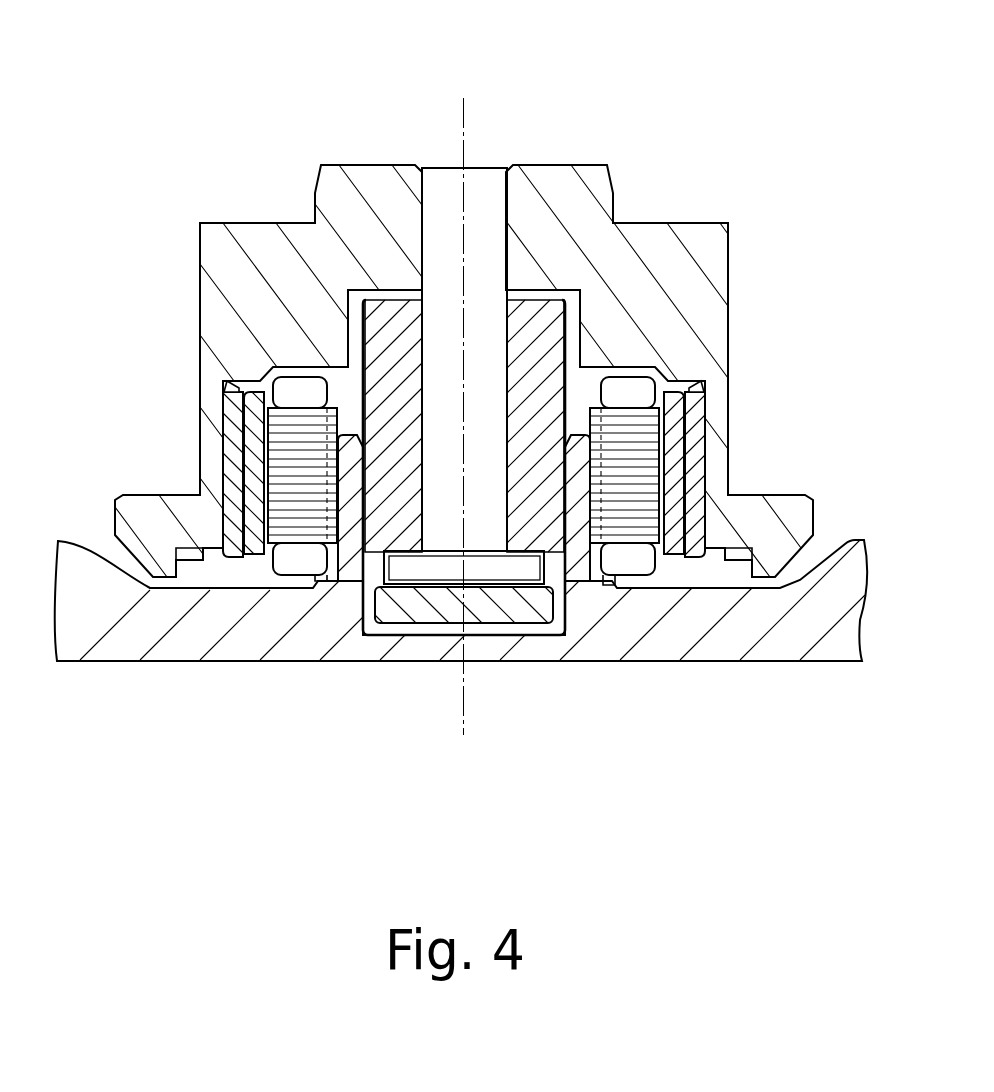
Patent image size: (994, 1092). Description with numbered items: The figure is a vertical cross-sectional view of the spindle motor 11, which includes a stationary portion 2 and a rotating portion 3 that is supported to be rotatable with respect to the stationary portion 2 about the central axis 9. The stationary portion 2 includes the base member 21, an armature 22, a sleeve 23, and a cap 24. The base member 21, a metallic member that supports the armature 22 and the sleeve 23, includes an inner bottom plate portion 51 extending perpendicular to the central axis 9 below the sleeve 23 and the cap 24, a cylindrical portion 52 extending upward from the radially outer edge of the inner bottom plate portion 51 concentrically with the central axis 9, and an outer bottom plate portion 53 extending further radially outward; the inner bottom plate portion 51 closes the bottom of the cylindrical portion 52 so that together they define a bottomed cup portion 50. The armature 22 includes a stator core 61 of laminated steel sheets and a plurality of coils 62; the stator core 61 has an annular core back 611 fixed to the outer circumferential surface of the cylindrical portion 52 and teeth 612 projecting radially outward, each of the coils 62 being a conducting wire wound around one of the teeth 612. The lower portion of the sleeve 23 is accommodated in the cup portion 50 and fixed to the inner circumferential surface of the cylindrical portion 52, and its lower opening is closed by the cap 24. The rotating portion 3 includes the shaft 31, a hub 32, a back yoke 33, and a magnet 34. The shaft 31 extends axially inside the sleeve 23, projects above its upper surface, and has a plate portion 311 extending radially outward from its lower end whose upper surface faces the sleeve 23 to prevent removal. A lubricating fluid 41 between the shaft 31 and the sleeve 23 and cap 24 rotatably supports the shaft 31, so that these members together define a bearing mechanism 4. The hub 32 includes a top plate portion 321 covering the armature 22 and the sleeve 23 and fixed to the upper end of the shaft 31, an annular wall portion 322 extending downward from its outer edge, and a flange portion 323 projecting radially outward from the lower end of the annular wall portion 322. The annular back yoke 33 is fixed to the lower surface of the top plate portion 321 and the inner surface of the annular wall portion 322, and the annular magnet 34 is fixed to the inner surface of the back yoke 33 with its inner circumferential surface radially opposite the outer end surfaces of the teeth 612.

The spindle motor 11 is at (350, 95).
The central axis 9 is at (463, 118).
The stationary portion 2 is at (461, 567).
The base member 21 is at (461, 567).
The armature 22 is at (486, 584).
The sleeve 23 is at (387, 350).
The cap 24 is at (497, 600).
The rotating portion 3 is at (252, 203).
The shaft 31 is at (479, 392).
The plate portion 311 is at (518, 570).
The hub 32 is at (719, 321).
The top plate portion 321 is at (612, 263).
The annular wall portion 322 is at (718, 435).
The flange portion 323 is at (780, 516).
The back yoke 33 is at (228, 506).
The magnet 34 is at (222, 528).
The bearing mechanism 4 is at (382, 415).
The lubricating fluid 41 is at (513, 310).
The cup portion 50 is at (442, 545).
The inner bottom plate portion 51 is at (415, 650).
The cylindrical portion 52 is at (352, 480).
The outer bottom plate portion 53 is at (210, 625).
The stator core 61 is at (472, 562).
The core back 611 is at (600, 503).
The teeth 612 is at (623, 503).
The coils 62 is at (650, 560).